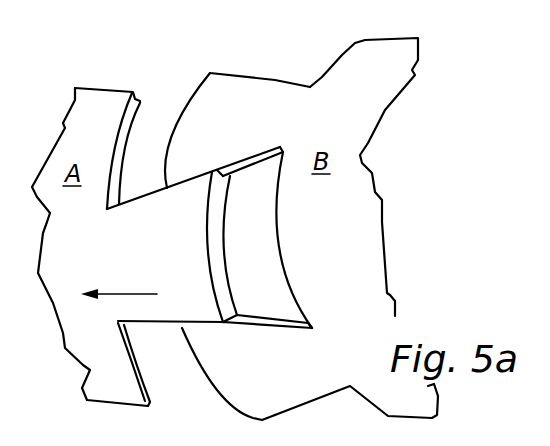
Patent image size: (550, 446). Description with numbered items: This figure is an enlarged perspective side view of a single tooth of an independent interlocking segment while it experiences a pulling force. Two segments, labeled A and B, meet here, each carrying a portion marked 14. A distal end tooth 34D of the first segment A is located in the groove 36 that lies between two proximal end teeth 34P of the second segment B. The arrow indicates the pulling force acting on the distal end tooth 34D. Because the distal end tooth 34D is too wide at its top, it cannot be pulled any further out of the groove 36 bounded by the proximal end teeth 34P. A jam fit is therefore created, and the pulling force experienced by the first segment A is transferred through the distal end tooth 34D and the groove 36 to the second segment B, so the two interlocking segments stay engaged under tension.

The turbine blade / airfoil portions (sides A and B) 14 is at (78, 271).
The proximal end teeth 34P is at (258, 129).
The distal end tooth 34D is at (178, 269).
The groove 36 is at (264, 266).